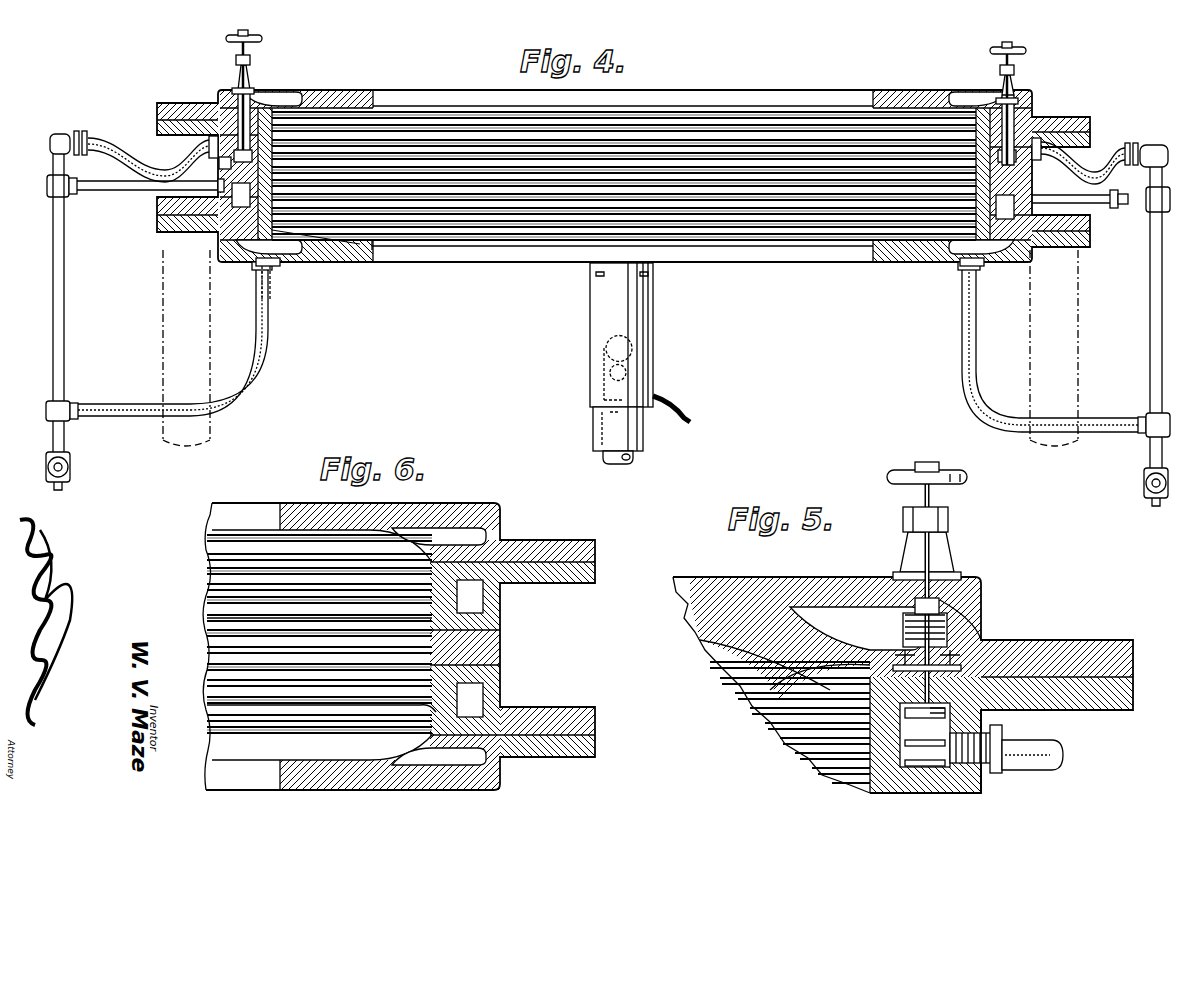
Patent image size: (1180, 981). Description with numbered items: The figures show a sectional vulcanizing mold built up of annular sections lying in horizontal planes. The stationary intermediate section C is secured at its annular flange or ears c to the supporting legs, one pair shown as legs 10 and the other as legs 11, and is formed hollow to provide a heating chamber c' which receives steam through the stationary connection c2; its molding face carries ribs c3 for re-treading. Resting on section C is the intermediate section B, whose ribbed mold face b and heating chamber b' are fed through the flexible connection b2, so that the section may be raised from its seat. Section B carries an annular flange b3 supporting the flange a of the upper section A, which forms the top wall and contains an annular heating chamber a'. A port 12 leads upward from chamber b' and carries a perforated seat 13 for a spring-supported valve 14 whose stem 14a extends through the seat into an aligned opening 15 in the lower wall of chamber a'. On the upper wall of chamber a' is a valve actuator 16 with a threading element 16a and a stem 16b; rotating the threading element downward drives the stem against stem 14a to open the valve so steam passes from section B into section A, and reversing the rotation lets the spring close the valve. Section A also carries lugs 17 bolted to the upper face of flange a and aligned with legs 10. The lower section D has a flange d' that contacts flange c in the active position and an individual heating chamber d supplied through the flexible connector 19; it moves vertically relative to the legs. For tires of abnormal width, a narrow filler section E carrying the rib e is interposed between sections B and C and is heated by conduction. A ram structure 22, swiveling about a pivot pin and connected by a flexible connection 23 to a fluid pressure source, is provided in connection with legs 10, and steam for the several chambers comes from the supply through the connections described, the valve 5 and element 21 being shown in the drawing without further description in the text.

In FIG. 4, the upper section A is at (340, 88).
In FIG. 6, the upper section A is at (465, 503).
In FIG. 5, the upper section A is at (800, 578).
In FIG. 4, the flange a is at (646, 103).
In FIG. 6, the flange a is at (525, 540).
In FIG. 5, the flange a is at (1070, 651).
In FIG. 4, the heating chamber a' is at (625, 77).
In FIG. 6, the heating chamber a' is at (439, 536).
In FIG. 5, the heating chamber a' is at (855, 601).
In FIG. 4, the ribbed mold face b is at (624, 152).
In FIG. 6, the ribbed mold face b is at (304, 632).
In FIG. 5, the ribbed mold face b is at (781, 722).
In FIG. 4, the chamber b' is at (210, 166).
In FIG. 6, the chamber b' is at (470, 596).
In FIG. 5, the chamber b' is at (925, 803).
In FIG. 4, the flexible connection b2 is at (88, 134).
In FIG. 5, the flexible connection b2 is at (1065, 754).
In FIG. 4, the annular flange b3 is at (1075, 118).
In FIG. 6, the annular flange b3 is at (598, 575).
In FIG. 5, the annular flange b3 is at (1133, 695).
In FIG. 4, the intermediate section B is at (155, 130).
In FIG. 6, the intermediate section B is at (505, 612).
In FIG. 5, the intermediate section B is at (985, 792).
In FIG. 4, the annular flange c is at (595, 224).
In FIG. 4, the heating chamber c' is at (623, 201).
In FIG. 6, the heating chamber c' is at (470, 700).
In FIG. 4, the stationary connection c2 is at (110, 196).
In FIG. 4, the ribs c3 is at (375, 262).
In FIG. 6, the ribs c3 is at (220, 700).
In FIG. 4, the heating chamber d is at (621, 273).
In FIG. 6, the heating chamber d is at (413, 751).
In FIG. 4, the flange d' is at (623, 255).
In FIG. 6, the flange d' is at (568, 747).
In FIG. 4, the lower section D is at (306, 262).
In FIG. 6, the lower section D is at (505, 786).
In FIG. 6, the additional section E is at (505, 660).
In FIG. 6, the rib e is at (205, 633).
In FIG. 4, the valve 5 is at (72, 470).
In FIG. 4, the legs 10 is at (638, 445).
In FIG. 4, the legs 11 is at (163, 350).
In FIG. 5, the port 12 is at (1030, 710).
In FIG. 4, the perforated seat 13 is at (262, 96).
In FIG. 5, the perforated seat 13 is at (985, 640).
In FIG. 5, the spring-supported valve 14 is at (950, 716).
In FIG. 5, the stem 14a is at (1000, 665).
In FIG. 4, the opening 15 is at (990, 96).
In FIG. 5, the opening 15 is at (898, 660).
In FIG. 4, the valve actuator 16 is at (250, 68).
In FIG. 5, the valve actuator 16 is at (955, 550).
In FIG. 4, the threading element 16a is at (262, 38).
In FIG. 5, the threading element 16a is at (950, 470).
In FIG. 4, the stem 16b is at (238, 92).
In FIG. 5, the stem 16b is at (921, 652).
In FIG. 4, the lugs 17 is at (232, 100).
In FIG. 4, the flexible connector 19 is at (270, 365).
In FIG. 4, the bracket 21 is at (655, 336).
In FIG. 4, the ram structure 22 is at (633, 460).
In FIG. 4, the flexible connection 23 is at (680, 405).